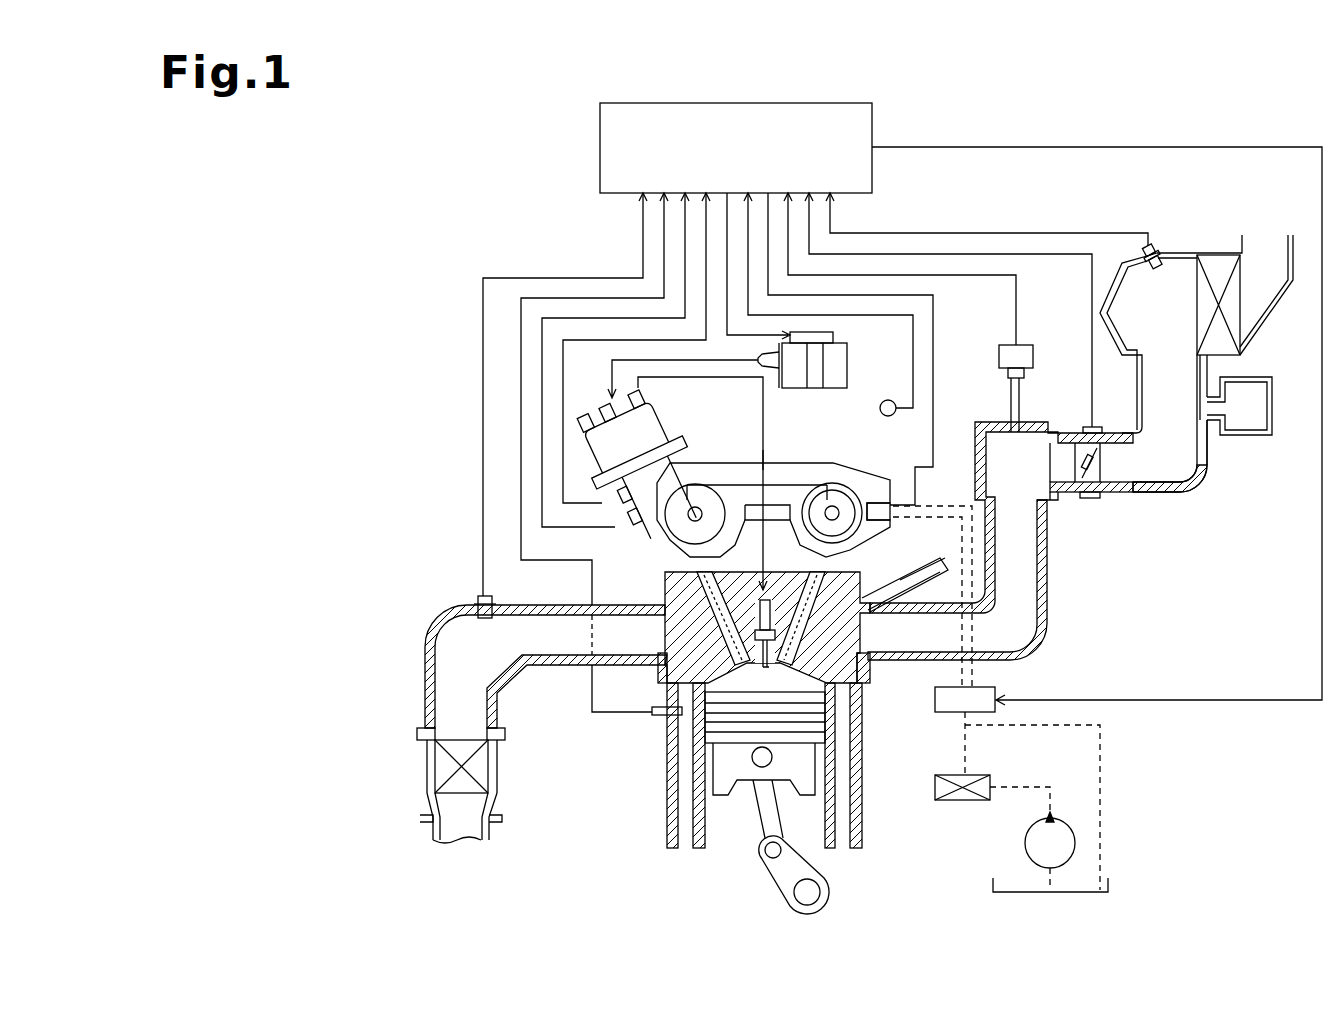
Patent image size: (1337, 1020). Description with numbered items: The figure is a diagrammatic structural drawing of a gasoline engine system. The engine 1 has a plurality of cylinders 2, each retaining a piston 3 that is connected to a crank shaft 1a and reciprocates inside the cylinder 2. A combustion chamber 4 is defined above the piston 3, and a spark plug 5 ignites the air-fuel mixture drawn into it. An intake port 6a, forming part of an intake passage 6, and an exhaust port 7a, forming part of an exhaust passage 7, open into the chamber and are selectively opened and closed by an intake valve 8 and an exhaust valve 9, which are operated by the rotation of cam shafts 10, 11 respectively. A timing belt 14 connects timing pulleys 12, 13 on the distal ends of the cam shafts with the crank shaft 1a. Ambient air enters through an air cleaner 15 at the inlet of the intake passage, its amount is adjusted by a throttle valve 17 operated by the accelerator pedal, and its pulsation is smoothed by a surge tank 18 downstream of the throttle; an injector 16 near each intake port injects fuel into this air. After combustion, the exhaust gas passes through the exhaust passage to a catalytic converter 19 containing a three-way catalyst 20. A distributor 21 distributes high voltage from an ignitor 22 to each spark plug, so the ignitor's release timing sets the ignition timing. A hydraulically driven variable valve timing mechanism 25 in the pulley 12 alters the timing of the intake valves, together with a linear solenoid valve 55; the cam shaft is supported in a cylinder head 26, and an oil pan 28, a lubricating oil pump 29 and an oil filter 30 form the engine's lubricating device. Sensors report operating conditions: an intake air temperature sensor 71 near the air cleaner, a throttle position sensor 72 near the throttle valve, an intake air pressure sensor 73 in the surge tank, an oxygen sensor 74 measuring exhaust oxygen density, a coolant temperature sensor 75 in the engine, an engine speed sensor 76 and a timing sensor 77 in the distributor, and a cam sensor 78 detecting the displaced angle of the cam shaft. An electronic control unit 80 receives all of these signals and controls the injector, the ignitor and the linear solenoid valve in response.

The engine 1 is at (872, 792).
The crank shaft 1a is at (812, 892).
The cylinder 2 is at (668, 820).
The piston 3 is at (693, 790).
The combustion chamber 4 is at (835, 703).
The spark plug 5 is at (769, 598).
The intake passage 6 is at (1023, 632).
The intake port 6a is at (870, 668).
The exhaust passage 7 is at (545, 615).
The exhaust port 7a is at (660, 670).
The intake valve 8 is at (800, 652).
The exhaust valve 9 is at (718, 652).
The cam shaft 10 is at (876, 520).
The cam shaft 11 is at (703, 521).
The timing pulley 12 is at (860, 482).
The timing pulley 13 is at (696, 484).
The timing belt 14 is at (772, 470).
The air cleaner 15 is at (1262, 284).
The injector 16 is at (919, 558).
The throttle valve 17 is at (1098, 463).
The surge tank 18 is at (995, 438).
The catalytic converter 19 is at (490, 768).
The three-way catalyst 20 is at (482, 785).
The distributor 21 is at (650, 418).
The ignitor 22 is at (848, 356).
The variable valve timing mechanism 25 is at (836, 490).
The cylinder head 26 is at (668, 580).
The oil pan 28 is at (1108, 887).
The lubricating oil pump 29 is at (1025, 857).
The oil filter 30 is at (962, 800).
The linear solenoid valve 55 is at (995, 687).
The intake air temperature sensor 71 is at (1160, 248).
The throttle position sensor 72 is at (1085, 428).
The intake air pressure sensor 73 is at (999, 357).
The oxygen sensor 74 is at (481, 598).
The coolant temperature sensor 75 is at (660, 718).
The engine speed sensor 76 is at (606, 516).
The timing sensor 77 is at (616, 544).
The cam sensor 78 is at (887, 400).
The electronic control unit 80 is at (600, 147).